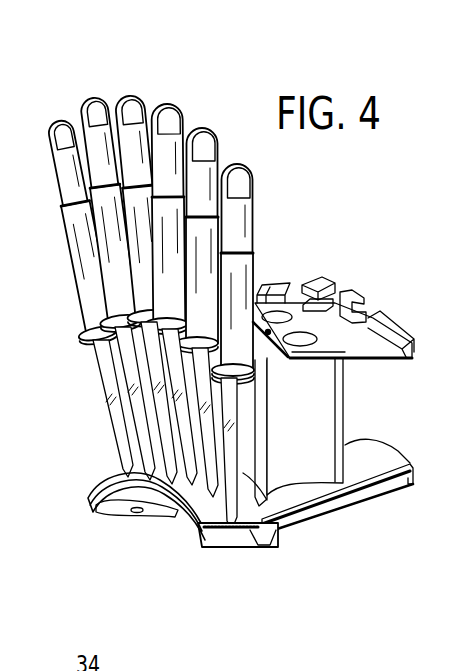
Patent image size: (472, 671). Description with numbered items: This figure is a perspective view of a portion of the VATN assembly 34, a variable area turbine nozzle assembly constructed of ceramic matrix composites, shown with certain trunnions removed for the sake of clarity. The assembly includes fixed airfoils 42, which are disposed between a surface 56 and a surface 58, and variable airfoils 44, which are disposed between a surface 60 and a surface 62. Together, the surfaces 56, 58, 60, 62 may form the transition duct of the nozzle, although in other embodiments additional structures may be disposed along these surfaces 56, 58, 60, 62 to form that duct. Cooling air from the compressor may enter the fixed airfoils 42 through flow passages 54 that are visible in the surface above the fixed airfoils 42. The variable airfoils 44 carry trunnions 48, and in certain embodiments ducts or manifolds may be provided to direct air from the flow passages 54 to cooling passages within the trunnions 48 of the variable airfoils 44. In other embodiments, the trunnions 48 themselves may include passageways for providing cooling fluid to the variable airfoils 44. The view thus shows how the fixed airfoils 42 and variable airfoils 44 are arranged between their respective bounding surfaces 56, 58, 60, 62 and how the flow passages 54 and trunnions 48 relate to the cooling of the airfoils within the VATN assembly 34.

The VATN assembly 34 is at (72, 76).
The trunnions 48 is at (238, 272).
The variable airfoils 44 is at (142, 415).
The flow passages 54 is at (306, 330).
The surface 56 is at (380, 343).
The fixed airfoils 42 is at (329, 405).
The surface 60 is at (263, 402).
The surface 58 is at (367, 459).
The surface 62 is at (208, 520).